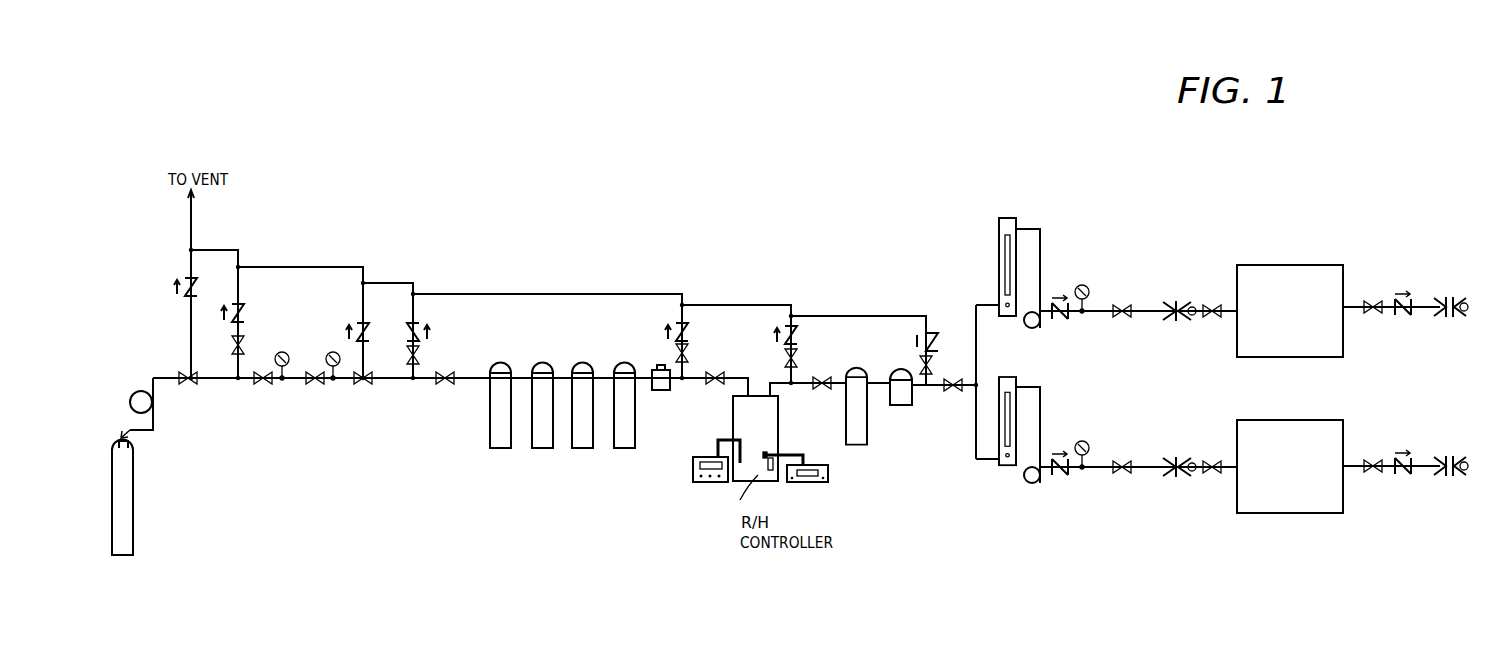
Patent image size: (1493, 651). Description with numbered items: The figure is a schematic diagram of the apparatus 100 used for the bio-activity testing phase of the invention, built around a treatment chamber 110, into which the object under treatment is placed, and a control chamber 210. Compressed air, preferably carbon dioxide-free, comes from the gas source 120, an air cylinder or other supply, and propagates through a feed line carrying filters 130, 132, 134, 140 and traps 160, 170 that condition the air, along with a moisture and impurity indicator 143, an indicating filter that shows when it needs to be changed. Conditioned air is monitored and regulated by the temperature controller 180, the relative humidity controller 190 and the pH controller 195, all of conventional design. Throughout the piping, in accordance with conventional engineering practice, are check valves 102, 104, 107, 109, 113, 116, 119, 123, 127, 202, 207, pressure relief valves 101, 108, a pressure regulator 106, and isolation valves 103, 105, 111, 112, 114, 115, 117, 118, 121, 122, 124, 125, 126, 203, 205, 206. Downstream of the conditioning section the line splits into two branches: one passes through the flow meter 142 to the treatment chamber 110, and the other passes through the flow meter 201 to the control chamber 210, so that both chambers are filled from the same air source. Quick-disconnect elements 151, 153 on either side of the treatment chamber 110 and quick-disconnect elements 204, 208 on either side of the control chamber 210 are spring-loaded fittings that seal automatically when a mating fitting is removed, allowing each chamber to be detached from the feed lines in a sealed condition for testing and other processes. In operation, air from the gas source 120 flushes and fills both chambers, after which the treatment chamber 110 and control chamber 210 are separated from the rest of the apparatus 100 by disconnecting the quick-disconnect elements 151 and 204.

The apparatus 100 is at (779, 234).
The pressure relief valve 101 is at (186, 372).
The check valve 102 is at (186, 282).
The isolation valve 103 is at (242, 344).
The check valve 104 is at (242, 312).
The isolation valve 105 is at (260, 387).
The pressure regulator 106 is at (314, 387).
The check valve 107 is at (360, 326).
The pressure relief valve 108 is at (369, 387).
The check valve 109 is at (420, 326).
The treatment chamber 110 is at (1285, 264).
The isolation valve 111 is at (415, 370).
The isolation valve 112 is at (455, 386).
The check valve 113 is at (686, 320).
The isolation valve 114 is at (689, 352).
The isolation valve 115 is at (722, 372).
The check valve 116 is at (795, 325).
The isolation valve 117 is at (798, 368).
The isolation valve 118 is at (830, 390).
The check valve 119 is at (928, 330).
The gas source 120 is at (140, 526).
The isolation valve 121 is at (920, 362).
The isolation valve 122 is at (946, 391).
The check valve 123 is at (1068, 322).
The isolation valve 124 is at (1126, 302).
The isolation valve 125 is at (1214, 320).
The isolation valve 126 is at (1380, 300).
The check valve 127 is at (1410, 296).
The filter 130 is at (502, 452).
The filter 132 is at (860, 446).
The filter 134 is at (901, 406).
The filter 140 is at (545, 450).
The flow meter 142 is at (1017, 227).
The moisture and impurity indicator 143 is at (656, 366).
The quick-disconnect element 151 is at (1176, 300).
The quick-disconnect element 153 is at (1443, 290).
The trap 160 is at (585, 450).
The trap 170 is at (622, 450).
The temperature controller 180 is at (690, 470).
The relative humidity controller 190 is at (734, 425).
The pH controller 195 is at (822, 484).
The flow meter 201 is at (1005, 470).
The check valve 202 is at (1068, 478).
The isolation valve 203 is at (1126, 476).
The quick-disconnect element 204 is at (1176, 478).
The isolation valve 205 is at (1215, 476).
The isolation valve 206 is at (1368, 475).
The check valve 207 is at (1408, 476).
The quick-disconnect element 208 is at (1441, 450).
The control chamber 210 is at (1306, 420).